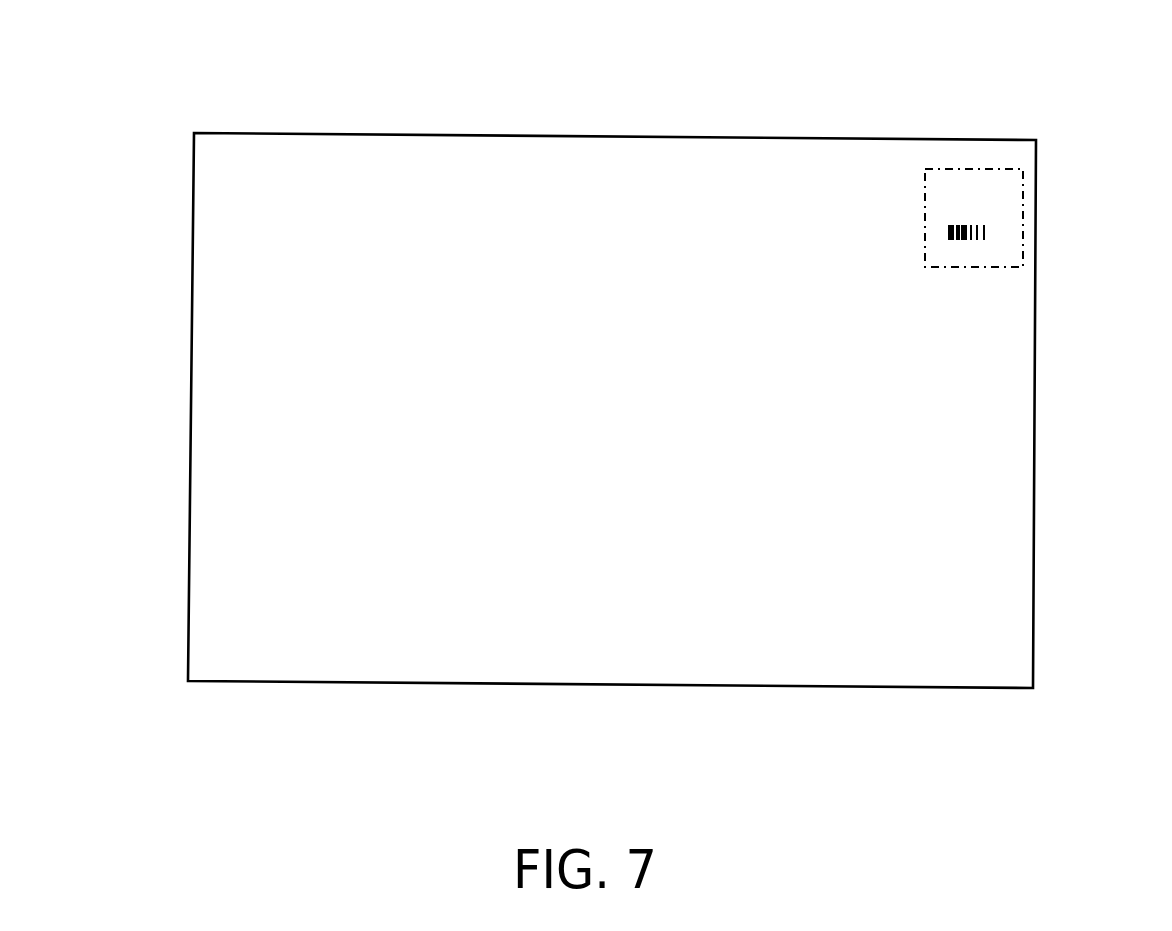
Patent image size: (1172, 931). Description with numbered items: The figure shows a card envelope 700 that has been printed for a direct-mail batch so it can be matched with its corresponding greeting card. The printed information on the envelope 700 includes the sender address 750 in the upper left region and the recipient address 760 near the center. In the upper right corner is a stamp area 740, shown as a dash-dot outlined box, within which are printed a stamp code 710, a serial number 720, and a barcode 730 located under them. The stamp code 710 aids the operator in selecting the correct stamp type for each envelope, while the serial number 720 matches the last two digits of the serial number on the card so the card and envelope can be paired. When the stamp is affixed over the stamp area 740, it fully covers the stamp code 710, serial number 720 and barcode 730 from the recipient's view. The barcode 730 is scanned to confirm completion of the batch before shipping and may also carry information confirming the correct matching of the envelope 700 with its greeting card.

The envelope 700 is at (195, 120).
The stamp code 710 is at (997, 183).
The serial number 720 is at (941, 183).
The barcode 730 is at (981, 253).
The stamp area 740 is at (1023, 208).
The sender address 750 is at (221, 203).
The recipient address 760 is at (583, 333).